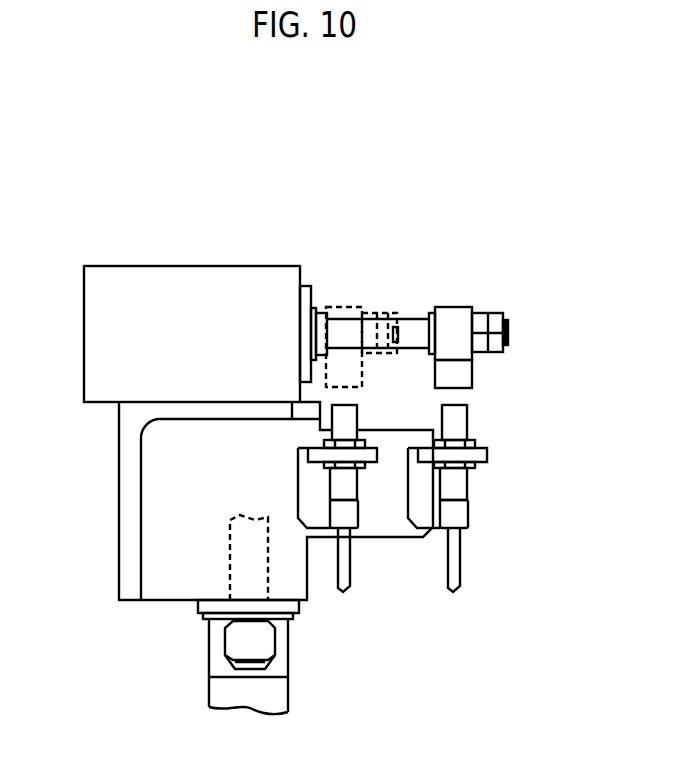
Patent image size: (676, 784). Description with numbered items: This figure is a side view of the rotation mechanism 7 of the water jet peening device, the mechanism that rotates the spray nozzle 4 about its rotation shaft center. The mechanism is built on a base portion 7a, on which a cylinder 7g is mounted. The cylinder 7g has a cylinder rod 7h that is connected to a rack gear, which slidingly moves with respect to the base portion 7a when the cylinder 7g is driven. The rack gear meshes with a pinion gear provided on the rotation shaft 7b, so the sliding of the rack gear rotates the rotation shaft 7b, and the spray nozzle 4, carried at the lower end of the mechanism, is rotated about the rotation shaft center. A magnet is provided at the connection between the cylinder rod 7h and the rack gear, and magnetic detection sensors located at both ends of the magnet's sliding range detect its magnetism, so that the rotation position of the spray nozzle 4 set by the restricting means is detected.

The rotation mechanism 7 is at (330, 248).
The base portion 7a is at (130, 498).
The rotation shaft 7b is at (230, 575).
The cylinder 7g is at (192, 277).
The cylinder rod 7h is at (413, 329).
The spray nozzle 4 is at (275, 695).